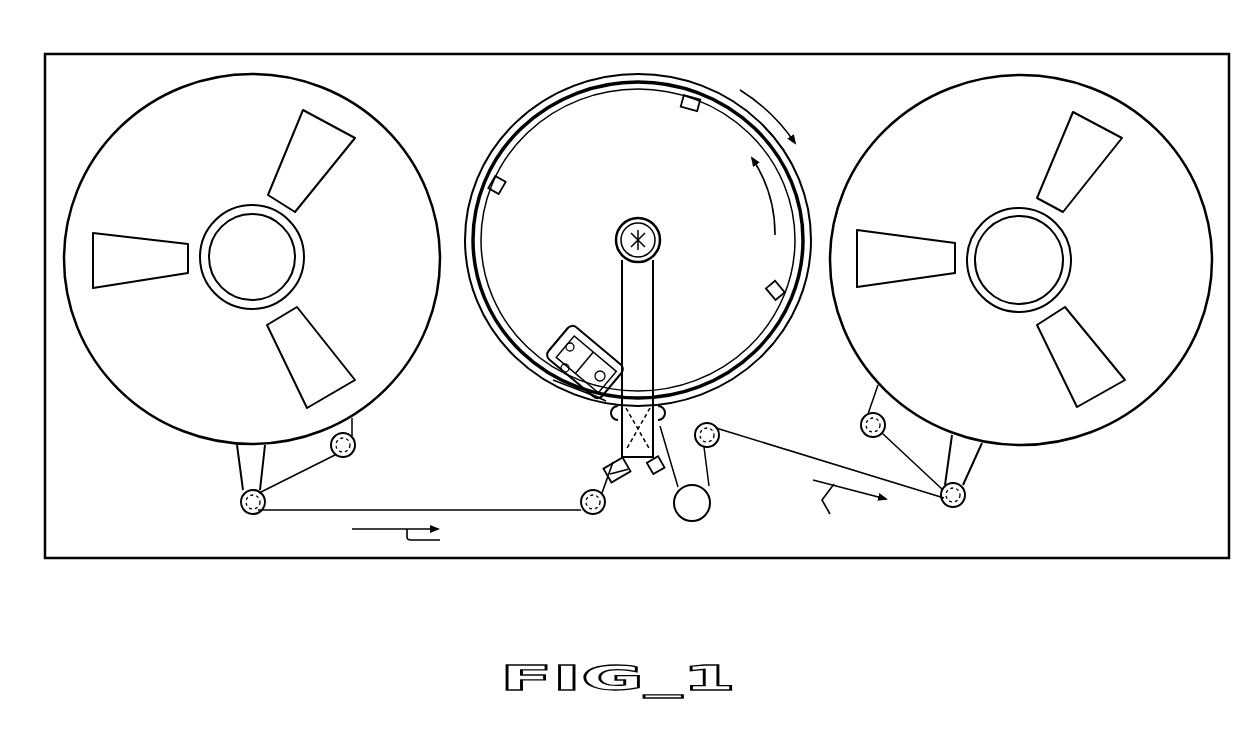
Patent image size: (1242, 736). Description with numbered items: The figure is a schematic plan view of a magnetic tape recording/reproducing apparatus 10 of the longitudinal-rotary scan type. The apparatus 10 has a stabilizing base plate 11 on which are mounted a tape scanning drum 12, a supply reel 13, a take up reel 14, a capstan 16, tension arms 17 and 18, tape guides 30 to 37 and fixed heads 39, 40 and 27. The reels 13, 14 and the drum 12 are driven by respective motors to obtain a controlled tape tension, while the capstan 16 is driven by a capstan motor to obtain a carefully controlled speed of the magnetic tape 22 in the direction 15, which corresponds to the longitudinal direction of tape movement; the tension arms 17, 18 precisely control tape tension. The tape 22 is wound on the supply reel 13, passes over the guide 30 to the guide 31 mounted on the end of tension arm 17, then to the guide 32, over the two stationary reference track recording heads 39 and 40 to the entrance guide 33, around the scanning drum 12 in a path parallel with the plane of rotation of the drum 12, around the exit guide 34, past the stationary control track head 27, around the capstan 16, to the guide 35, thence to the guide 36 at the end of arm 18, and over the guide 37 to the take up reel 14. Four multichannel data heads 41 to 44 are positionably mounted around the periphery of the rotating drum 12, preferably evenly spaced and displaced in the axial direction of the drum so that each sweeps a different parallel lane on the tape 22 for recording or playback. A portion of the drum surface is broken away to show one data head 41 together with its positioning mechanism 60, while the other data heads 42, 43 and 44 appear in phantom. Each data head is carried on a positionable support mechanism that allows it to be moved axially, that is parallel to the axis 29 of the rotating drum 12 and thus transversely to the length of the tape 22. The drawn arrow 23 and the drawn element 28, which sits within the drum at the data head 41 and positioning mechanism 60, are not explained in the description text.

The magnetic tape recording/reproducing apparatus 10 is at (380, 68).
The stabilizing base plate 11 is at (1096, 508).
The tape scanning drum 12 is at (545, 122).
The supply reel 13 is at (142, 118).
The take up reel 14 is at (1122, 113).
The direction of tape movement 15 is at (768, 106).
The capstan 16 is at (711, 506).
The tension arm 17 is at (245, 463).
The tension arm 18 is at (960, 462).
The magnetic tape 22 is at (492, 150).
The drum rotation arrow 23 is at (765, 198).
The stationary control track head 27 is at (655, 474).
The head assembly 28 is at (560, 352).
The axis of the rotating drum 29 is at (638, 236).
The tape guide 30 is at (358, 445).
The tape guide 31 is at (241, 503).
The tape guide 32 is at (581, 500).
The entrance guide 33 is at (617, 415).
The exit guide 34 is at (662, 413).
The tape guide 35 is at (720, 440).
The tape guide 36 is at (966, 495).
The tape guide 37 is at (860, 427).
The stationary reference track recording head 39 is at (607, 463).
The stationary reference track recording head 40 is at (606, 474).
The multichannel data head 41 is at (590, 390).
The multichannel data head 42 is at (770, 290).
The multichannel data head 43 is at (680, 102).
The multichannel data head 44 is at (505, 183).
The positioning mechanism 60 is at (578, 340).